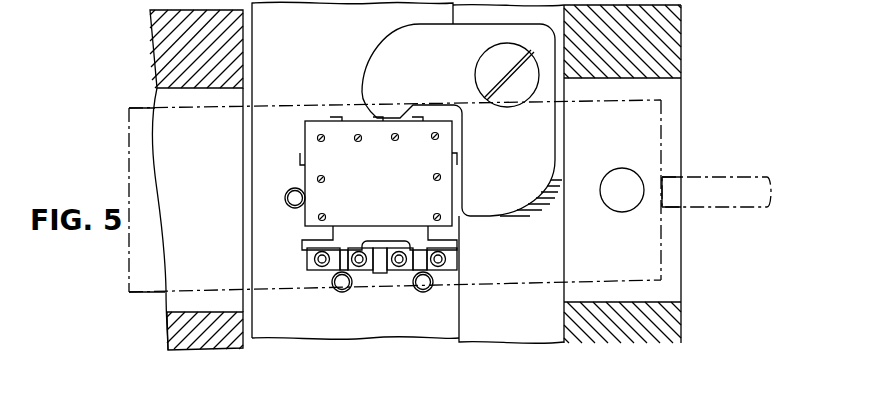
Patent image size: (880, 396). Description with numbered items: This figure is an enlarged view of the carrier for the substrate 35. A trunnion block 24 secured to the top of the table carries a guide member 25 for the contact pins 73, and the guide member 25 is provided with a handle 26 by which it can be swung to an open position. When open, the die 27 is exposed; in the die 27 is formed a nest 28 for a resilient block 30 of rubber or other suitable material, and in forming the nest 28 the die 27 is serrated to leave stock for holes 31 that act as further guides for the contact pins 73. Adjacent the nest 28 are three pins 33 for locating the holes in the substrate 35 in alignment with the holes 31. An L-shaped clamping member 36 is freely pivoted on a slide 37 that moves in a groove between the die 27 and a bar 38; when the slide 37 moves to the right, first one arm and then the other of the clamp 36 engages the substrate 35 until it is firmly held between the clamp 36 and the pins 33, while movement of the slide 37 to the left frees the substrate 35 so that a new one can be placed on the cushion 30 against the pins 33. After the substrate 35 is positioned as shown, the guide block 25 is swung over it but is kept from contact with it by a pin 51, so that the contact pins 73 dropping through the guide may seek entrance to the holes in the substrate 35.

The trunnion block 24 is at (158, 42).
The guide member 25 is at (128, 168).
The handle 26 is at (726, 176).
The die 27 is at (290, 80).
The nest 28 is at (380, 258).
The resilient block 30 is at (302, 244).
The holes 31 is at (314, 261).
The locating pins 33 is at (290, 190).
The substrate 35 is at (404, 200).
The clamping member 36 is at (377, 60).
The slide 37 is at (524, 255).
The bar 38 is at (674, 40).
The pin 51 is at (612, 178).
The contact pin 73 is at (358, 142).